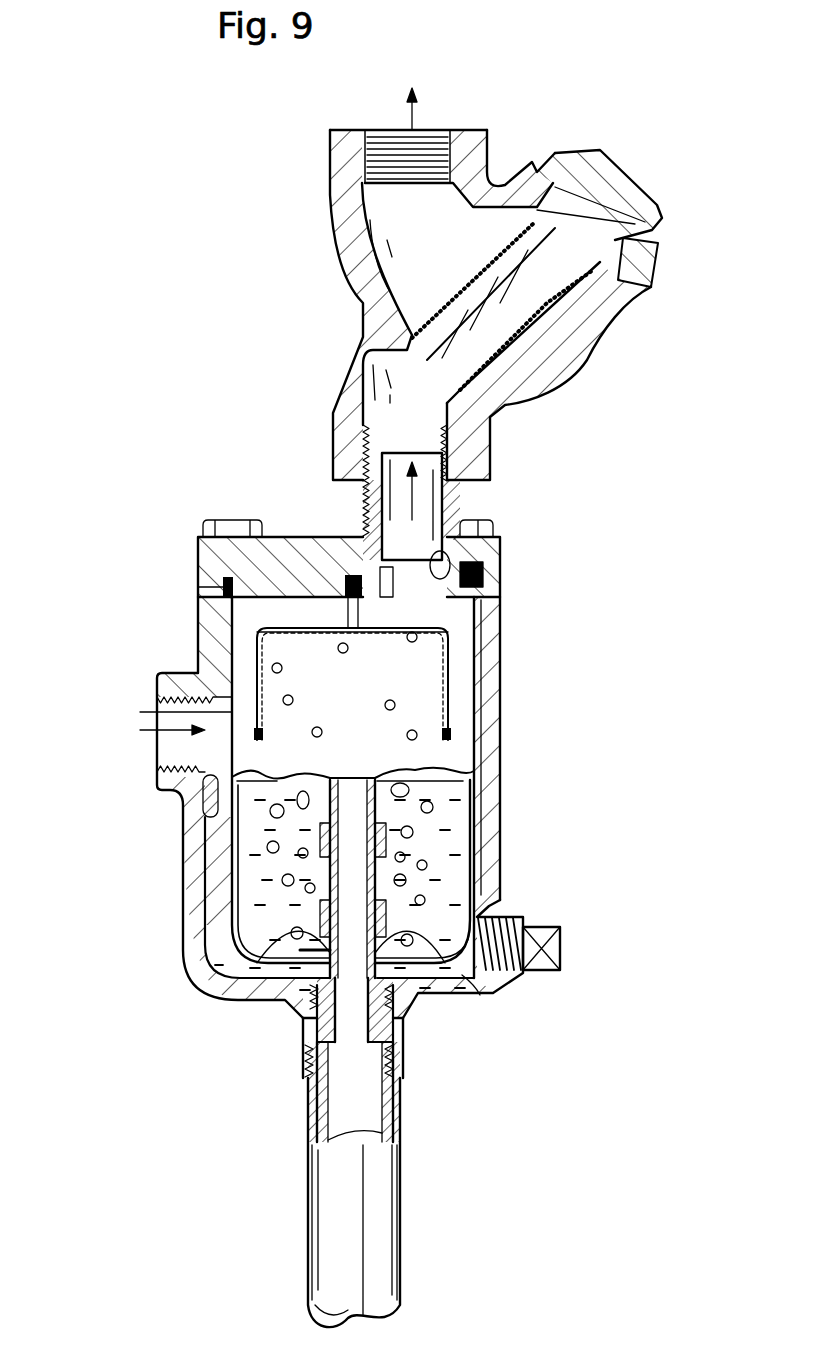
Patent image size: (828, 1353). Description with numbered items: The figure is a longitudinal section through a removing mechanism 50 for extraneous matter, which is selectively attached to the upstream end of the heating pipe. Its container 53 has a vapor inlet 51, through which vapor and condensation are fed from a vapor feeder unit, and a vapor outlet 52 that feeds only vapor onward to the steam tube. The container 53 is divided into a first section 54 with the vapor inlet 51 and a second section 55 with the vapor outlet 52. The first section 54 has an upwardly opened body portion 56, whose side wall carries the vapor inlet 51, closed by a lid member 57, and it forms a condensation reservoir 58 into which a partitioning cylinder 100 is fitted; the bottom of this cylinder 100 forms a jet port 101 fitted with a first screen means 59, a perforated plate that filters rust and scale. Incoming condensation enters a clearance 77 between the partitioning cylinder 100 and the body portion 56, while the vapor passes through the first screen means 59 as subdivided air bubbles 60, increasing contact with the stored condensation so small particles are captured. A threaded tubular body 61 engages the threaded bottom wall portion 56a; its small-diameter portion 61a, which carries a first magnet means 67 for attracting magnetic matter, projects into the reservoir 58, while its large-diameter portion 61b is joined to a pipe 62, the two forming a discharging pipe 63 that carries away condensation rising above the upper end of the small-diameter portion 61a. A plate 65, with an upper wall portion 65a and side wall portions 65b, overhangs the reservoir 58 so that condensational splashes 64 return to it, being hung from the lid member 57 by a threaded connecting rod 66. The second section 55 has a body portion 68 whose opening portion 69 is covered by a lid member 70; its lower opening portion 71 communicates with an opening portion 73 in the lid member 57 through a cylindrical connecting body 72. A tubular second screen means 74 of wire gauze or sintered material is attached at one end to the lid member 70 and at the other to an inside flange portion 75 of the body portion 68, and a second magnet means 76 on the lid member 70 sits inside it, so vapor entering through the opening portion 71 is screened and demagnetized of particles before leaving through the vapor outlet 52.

The removing mechanism for extraneous matter 50 is at (228, 480).
The vapor inlet 51 is at (178, 742).
The vapor outlet 52 is at (437, 138).
The container 53 is at (503, 745).
The first section 54 is at (500, 865).
The second section 55 is at (586, 362).
The body portion 56 is at (480, 838).
The threaded bottom wall portion 56a is at (295, 1003).
The lid member 57 is at (298, 535).
The condensation reservoir 58 is at (232, 830).
The first screen means 59 is at (335, 960).
The subdivided air bubbles 60 is at (400, 810).
The threaded tubular body 61 is at (405, 1048).
The small-diameter portion 61a is at (480, 765).
The large-diameter portion 61b is at (407, 1028).
The pipe 62 is at (404, 1203).
The discharging pipe 63 is at (306, 1180).
The condensational splashes 64 is at (395, 703).
The plate 65 is at (455, 667).
The upper wall portion 65a is at (232, 597).
The side wall portions 65b is at (255, 680).
The threaded connecting rod 66 is at (348, 572).
The first magnet means 67 is at (245, 835).
The body portion 68 is at (597, 352).
The opening portion 69 is at (650, 234).
The lid member 70 is at (573, 192).
The lower opening portion 71 is at (445, 500).
The cylindrical connecting body 72 is at (470, 505).
The opening portion 73 is at (473, 577).
The second screen means 74 is at (470, 392).
The inside flange portion 75 is at (407, 345).
The second magnet means 76 is at (612, 297).
The clearance 77 is at (212, 918).
The partitioning cylinder 100 is at (228, 905).
The jet port 101 is at (250, 962).